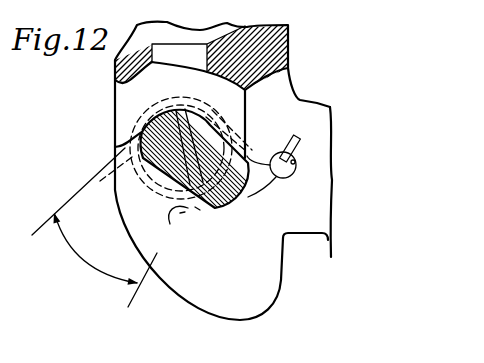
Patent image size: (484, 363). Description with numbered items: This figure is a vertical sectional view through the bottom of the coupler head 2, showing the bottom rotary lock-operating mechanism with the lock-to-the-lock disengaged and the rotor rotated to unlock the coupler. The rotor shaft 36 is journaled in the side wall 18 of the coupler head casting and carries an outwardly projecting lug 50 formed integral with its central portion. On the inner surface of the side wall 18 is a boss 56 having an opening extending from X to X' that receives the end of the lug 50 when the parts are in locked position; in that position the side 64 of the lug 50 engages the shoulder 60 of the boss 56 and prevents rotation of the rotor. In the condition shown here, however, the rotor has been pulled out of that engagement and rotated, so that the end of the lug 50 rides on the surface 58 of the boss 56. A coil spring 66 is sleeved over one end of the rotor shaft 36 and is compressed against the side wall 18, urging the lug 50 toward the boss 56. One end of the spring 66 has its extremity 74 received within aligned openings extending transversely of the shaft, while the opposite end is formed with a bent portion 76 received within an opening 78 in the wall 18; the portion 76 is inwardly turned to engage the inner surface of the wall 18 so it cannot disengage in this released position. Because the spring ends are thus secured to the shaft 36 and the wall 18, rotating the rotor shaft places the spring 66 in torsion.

The coupler head 2 is at (294, 37).
The side wall 18 is at (322, 203).
The rotor shaft 36 is at (128, 160).
The lug 50 is at (240, 187).
The boss 56 is at (195, 207).
The surface of the boss 58 is at (180, 213).
The shoulder of the boss 60 is at (174, 228).
The side of the lug 64 is at (297, 170).
The coil spring 66 is at (138, 106).
The spring extremity 74 is at (143, 184).
The bent portion 76 is at (291, 142).
The opening in the wall 78 is at (296, 162).